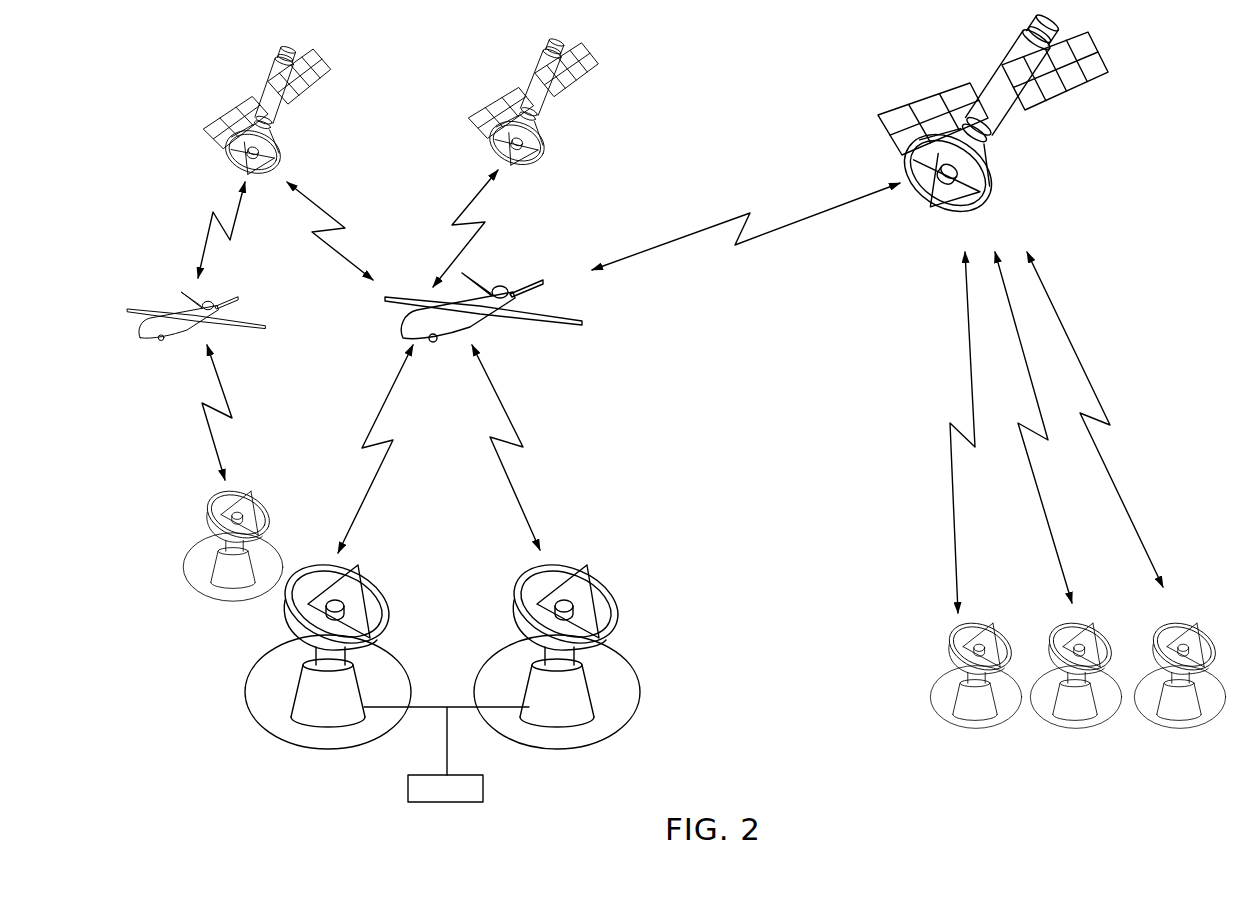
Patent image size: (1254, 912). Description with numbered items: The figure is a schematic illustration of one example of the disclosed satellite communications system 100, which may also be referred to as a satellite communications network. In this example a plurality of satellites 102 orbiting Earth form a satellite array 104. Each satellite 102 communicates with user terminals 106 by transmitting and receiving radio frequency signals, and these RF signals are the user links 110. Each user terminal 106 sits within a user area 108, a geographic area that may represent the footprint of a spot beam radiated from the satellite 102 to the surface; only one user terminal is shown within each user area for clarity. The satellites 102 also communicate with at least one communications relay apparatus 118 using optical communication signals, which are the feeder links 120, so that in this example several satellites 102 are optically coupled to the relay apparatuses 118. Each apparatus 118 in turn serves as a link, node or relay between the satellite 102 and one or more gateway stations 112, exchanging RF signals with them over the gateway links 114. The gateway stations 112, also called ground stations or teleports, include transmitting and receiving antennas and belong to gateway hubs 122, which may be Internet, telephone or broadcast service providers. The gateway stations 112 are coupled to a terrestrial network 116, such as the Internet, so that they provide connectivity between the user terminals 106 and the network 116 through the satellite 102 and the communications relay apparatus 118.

The satellite communications system 100 is at (1138, 118).
The satellite 102 is at (280, 118).
The satellite array 104 is at (230, 92).
The user terminal 106 is at (980, 718).
The user area 108 is at (963, 724).
The user link 110 is at (943, 477).
The gateway station 112 is at (227, 587).
The gateway link 114 is at (528, 478).
The terrestrial network 116 is at (408, 790).
The communications relay apparatus 118 is at (148, 338).
The feeder link 120 is at (692, 222).
The gateway hub 122 is at (185, 585).